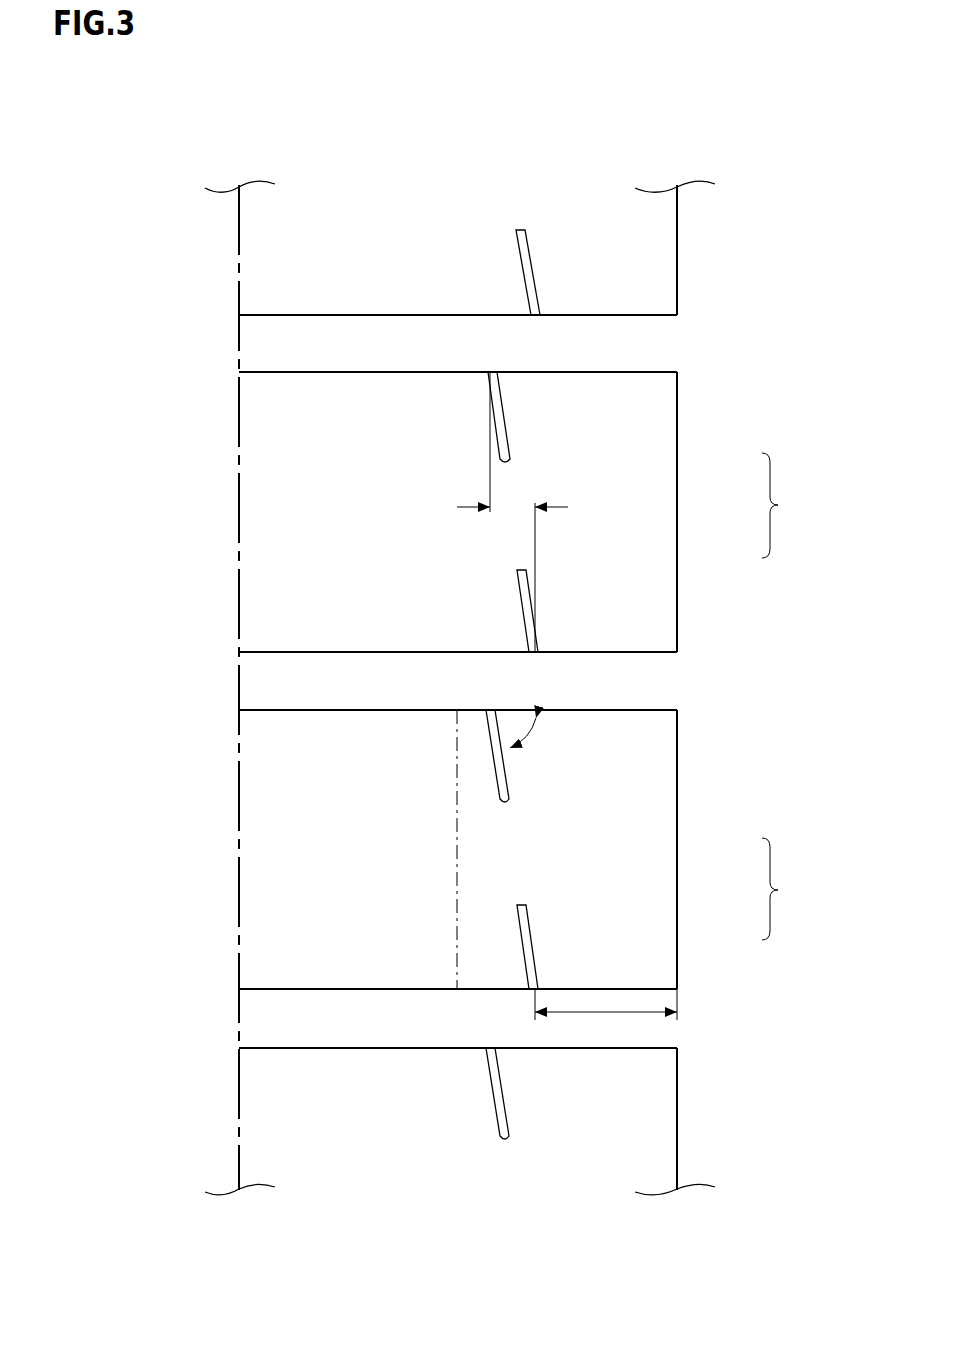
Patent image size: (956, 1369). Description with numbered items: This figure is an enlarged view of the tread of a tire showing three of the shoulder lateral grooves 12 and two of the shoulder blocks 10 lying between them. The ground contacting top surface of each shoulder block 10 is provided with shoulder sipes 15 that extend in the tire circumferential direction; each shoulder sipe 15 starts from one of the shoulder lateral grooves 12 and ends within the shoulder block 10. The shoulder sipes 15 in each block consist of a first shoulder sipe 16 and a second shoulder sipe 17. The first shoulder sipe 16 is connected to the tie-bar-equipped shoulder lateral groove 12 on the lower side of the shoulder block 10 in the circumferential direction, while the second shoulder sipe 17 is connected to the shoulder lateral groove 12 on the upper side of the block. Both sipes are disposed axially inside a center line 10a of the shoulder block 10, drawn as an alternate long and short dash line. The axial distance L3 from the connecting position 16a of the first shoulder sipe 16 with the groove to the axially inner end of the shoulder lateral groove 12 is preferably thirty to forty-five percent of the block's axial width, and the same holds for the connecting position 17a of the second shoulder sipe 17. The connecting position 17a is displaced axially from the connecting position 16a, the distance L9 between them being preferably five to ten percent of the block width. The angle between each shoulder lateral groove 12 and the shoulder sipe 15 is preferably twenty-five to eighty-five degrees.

The shoulder block 10 is at (295, 476).
The center line 10a is at (457, 852).
The shoulder lateral groove 12 is at (355, 350).
The shoulder sipe 15 is at (787, 696).
The first shoulder sipe 16 is at (531, 273).
The connecting position 16a is at (537, 654).
The second shoulder sipe 17 is at (507, 438).
The connecting position 17a is at (490, 371).
The axial distance L9 is at (512, 509).
The axial distance L3 is at (607, 1013).